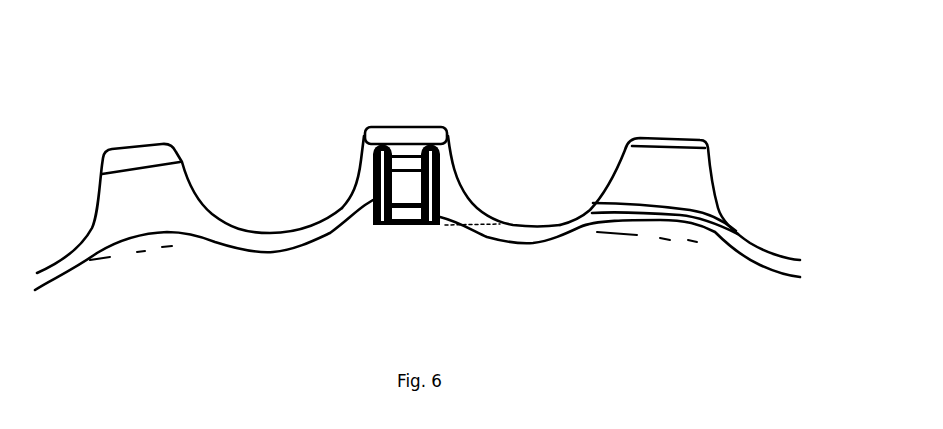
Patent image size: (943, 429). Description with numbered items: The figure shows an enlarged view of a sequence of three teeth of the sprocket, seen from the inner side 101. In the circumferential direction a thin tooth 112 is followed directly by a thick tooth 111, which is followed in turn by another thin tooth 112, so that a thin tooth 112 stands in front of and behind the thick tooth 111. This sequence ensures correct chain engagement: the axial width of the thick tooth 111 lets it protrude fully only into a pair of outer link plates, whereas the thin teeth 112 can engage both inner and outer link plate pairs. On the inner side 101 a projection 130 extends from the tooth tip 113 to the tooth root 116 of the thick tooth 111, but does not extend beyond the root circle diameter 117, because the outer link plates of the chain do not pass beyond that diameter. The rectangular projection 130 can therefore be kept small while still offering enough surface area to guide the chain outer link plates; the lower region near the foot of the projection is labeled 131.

The inner side 101 is at (439, 265).
The thick tooth 111 is at (451, 167).
The thin tooth 112 is at (134, 150).
The tooth tip 113 is at (440, 133).
The tooth root 116 is at (443, 217).
The root circle diameter 117 is at (201, 238).
The projection 130 is at (444, 230).
The foot of fastening element 131 is at (380, 227).